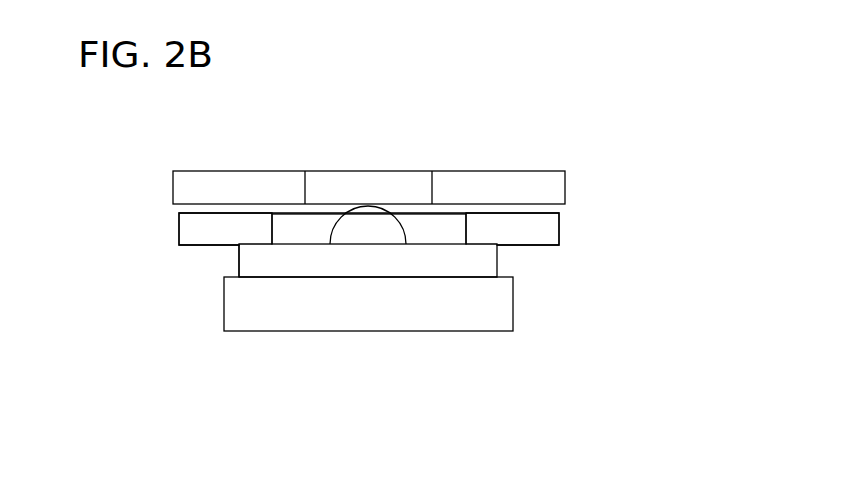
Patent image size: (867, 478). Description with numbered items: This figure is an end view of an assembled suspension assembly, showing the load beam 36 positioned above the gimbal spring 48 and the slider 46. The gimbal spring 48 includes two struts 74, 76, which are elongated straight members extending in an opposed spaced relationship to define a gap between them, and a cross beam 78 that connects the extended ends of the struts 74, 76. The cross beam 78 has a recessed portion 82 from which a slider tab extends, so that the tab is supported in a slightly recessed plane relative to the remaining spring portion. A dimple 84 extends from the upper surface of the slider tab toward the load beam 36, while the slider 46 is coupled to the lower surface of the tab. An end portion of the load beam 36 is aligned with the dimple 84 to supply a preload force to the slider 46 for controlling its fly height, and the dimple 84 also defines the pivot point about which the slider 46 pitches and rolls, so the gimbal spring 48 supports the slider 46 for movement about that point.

The load beam 36 is at (228, 172).
The gimbal spring 48 is at (562, 227).
The strut 76 is at (178, 223).
The strut 74 is at (558, 245).
The recessed portion 82 is at (428, 244).
The dimple 84 is at (373, 213).
The cross beam 78 is at (285, 263).
The slider 46 is at (371, 327).